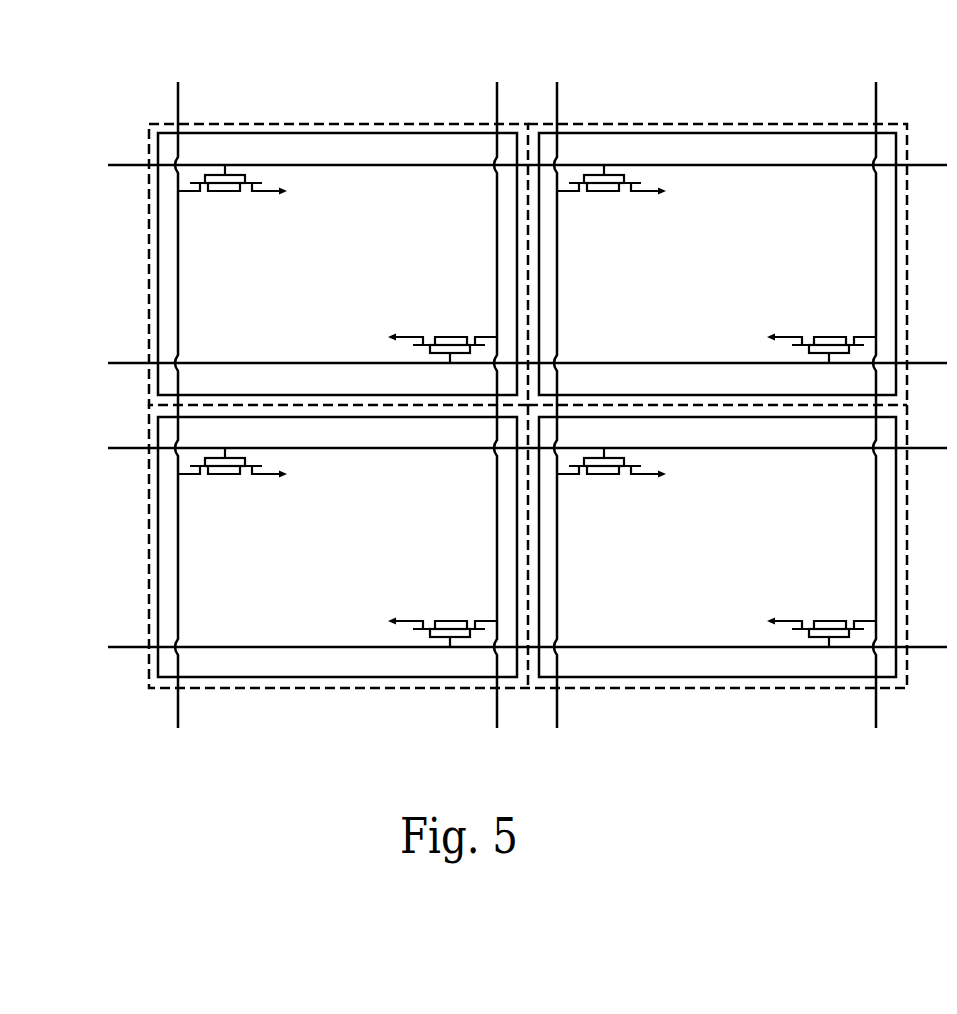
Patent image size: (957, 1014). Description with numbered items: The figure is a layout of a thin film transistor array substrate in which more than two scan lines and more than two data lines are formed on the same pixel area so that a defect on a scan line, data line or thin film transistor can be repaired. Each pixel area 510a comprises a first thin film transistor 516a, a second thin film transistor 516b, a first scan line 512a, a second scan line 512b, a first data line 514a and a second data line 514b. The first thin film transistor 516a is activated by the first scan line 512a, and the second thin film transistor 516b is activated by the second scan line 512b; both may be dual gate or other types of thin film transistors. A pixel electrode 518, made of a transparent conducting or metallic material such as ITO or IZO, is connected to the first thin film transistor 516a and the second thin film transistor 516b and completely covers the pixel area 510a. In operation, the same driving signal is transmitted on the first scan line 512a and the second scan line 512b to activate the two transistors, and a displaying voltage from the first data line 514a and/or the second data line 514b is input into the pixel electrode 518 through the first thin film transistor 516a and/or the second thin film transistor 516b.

The pixel area 510a is at (355, 124).
The first scan line 512a is at (130, 166).
The second scan line 512b is at (215, 363).
The first data line 514a is at (178, 111).
The second data line 514b is at (497, 103).
The first thin film transistor 516a is at (228, 174).
The second thin film transistor 516b is at (450, 336).
The pixel electrode 518 is at (158, 302).